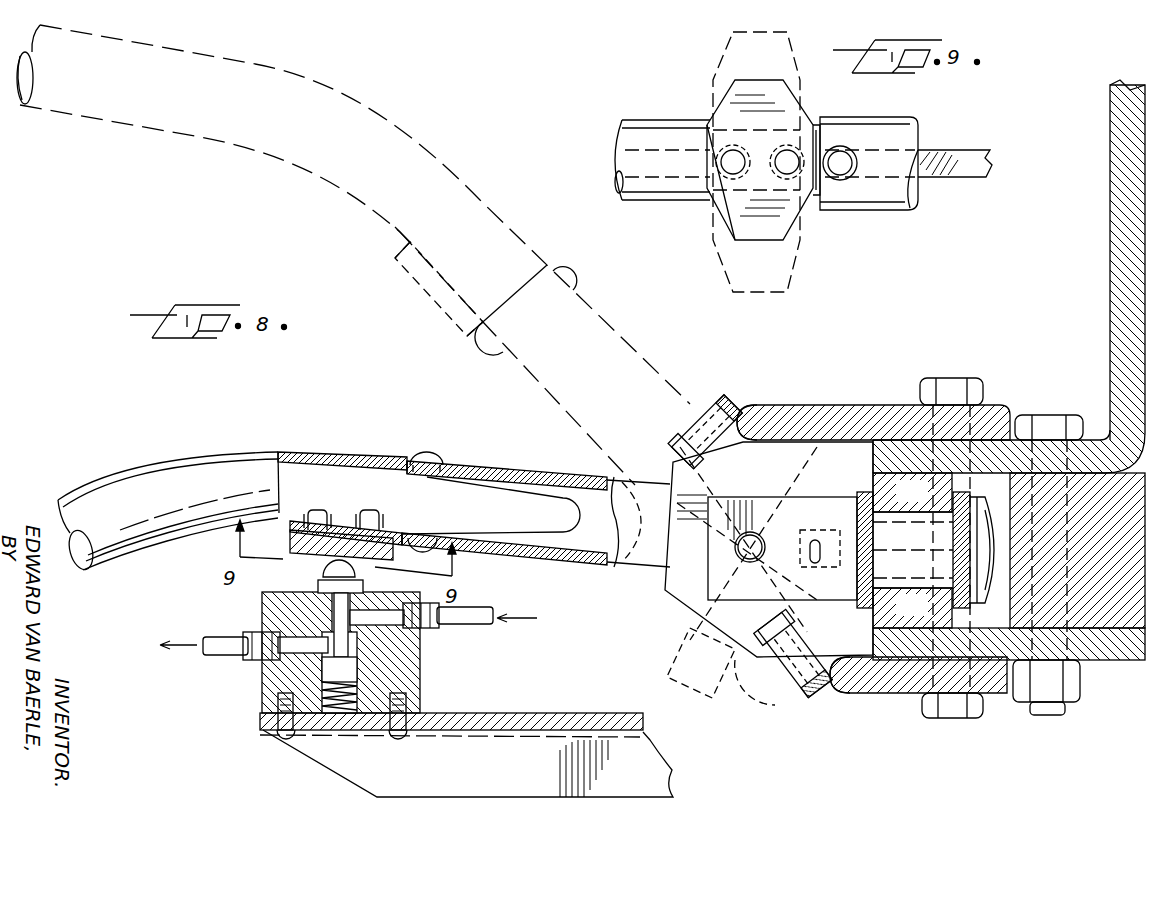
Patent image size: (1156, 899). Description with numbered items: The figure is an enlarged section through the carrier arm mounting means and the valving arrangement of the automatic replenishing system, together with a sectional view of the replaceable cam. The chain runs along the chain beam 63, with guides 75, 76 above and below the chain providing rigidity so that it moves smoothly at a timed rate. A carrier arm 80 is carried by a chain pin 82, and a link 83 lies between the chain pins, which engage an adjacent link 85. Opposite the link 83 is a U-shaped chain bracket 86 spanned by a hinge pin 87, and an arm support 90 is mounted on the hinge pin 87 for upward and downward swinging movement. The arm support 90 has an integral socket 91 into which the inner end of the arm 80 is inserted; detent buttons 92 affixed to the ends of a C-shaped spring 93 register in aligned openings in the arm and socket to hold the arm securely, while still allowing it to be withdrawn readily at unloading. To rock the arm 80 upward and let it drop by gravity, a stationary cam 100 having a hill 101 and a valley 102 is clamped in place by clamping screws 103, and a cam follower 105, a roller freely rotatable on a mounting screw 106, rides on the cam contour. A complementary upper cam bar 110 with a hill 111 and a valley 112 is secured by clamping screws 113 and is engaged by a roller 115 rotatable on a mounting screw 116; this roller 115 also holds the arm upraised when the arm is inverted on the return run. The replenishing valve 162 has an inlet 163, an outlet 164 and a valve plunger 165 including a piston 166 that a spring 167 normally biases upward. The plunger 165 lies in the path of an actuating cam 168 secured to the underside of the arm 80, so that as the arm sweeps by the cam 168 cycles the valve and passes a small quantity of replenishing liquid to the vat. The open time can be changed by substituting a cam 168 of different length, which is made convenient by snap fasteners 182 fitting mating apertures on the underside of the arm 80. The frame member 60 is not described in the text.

In FIG. 8, the channel bracket 60 is at (975, 487).
In FIG. 8, the chain beam 63 is at (1115, 292).
In FIG. 8, the guide 75 is at (912, 492).
In FIG. 8, the guide 76 is at (912, 608).
In FIG. 8, the carrier arm 80 is at (328, 182).
In FIG. 9, the carrier arm 80 is at (652, 135).
In FIG. 8, the chain pin 82 is at (823, 570).
In FIG. 8, the link 83 is at (980, 522).
In FIG. 8, the link 85 is at (863, 493).
In FIG. 8, the chain bracket 86 is at (783, 503).
In FIG. 8, the hinge pin 87 is at (745, 560).
In FIG. 8, the arm support 90 is at (683, 637).
In FIG. 8, the socket 91 is at (515, 362).
In FIG. 9, the socket 91 is at (910, 122).
In FIG. 8, the detent button 92 is at (428, 455).
In FIG. 9, the detent button 92 is at (845, 150).
In FIG. 8, the C-shaped spring 93 is at (530, 490).
In FIG. 9, the C-shaped spring 93 is at (960, 160).
In FIG. 8, the cam 100 is at (887, 699).
In FIG. 8, the hill 101 is at (738, 690).
In FIG. 8, the valley 102 is at (832, 682).
In FIG. 8, the clamping screw 103 is at (958, 716).
In FIG. 8, the cam follower 105 is at (798, 702).
In FIG. 8, the mounting screw 106 is at (790, 685).
In FIG. 8, the upper cam bar 110 is at (820, 403).
In FIG. 8, the hill 111 is at (735, 407).
In FIG. 8, the valley 112 is at (833, 392).
In FIG. 8, the clamping screw 113 is at (955, 380).
In FIG. 8, the roller 115 is at (733, 400).
In FIG. 8, the mounting screw 116 is at (670, 412).
In FIG. 8, the replenishing valve 162 is at (263, 688).
In FIG. 8, the inlet 163 is at (470, 627).
In FIG. 8, the outlet 164 is at (230, 648).
In FIG. 8, the valve plunger 165 is at (322, 566).
In FIG. 8, the piston 166 is at (357, 670).
In FIG. 8, the spring 167 is at (335, 720).
In FIG. 8, the actuating cam 168 is at (398, 272).
In FIG. 9, the actuating cam 168 is at (720, 100).
In FIG. 8, the snap fastener 182 is at (350, 485).
In FIG. 9, the snap fastener 182 is at (745, 178).